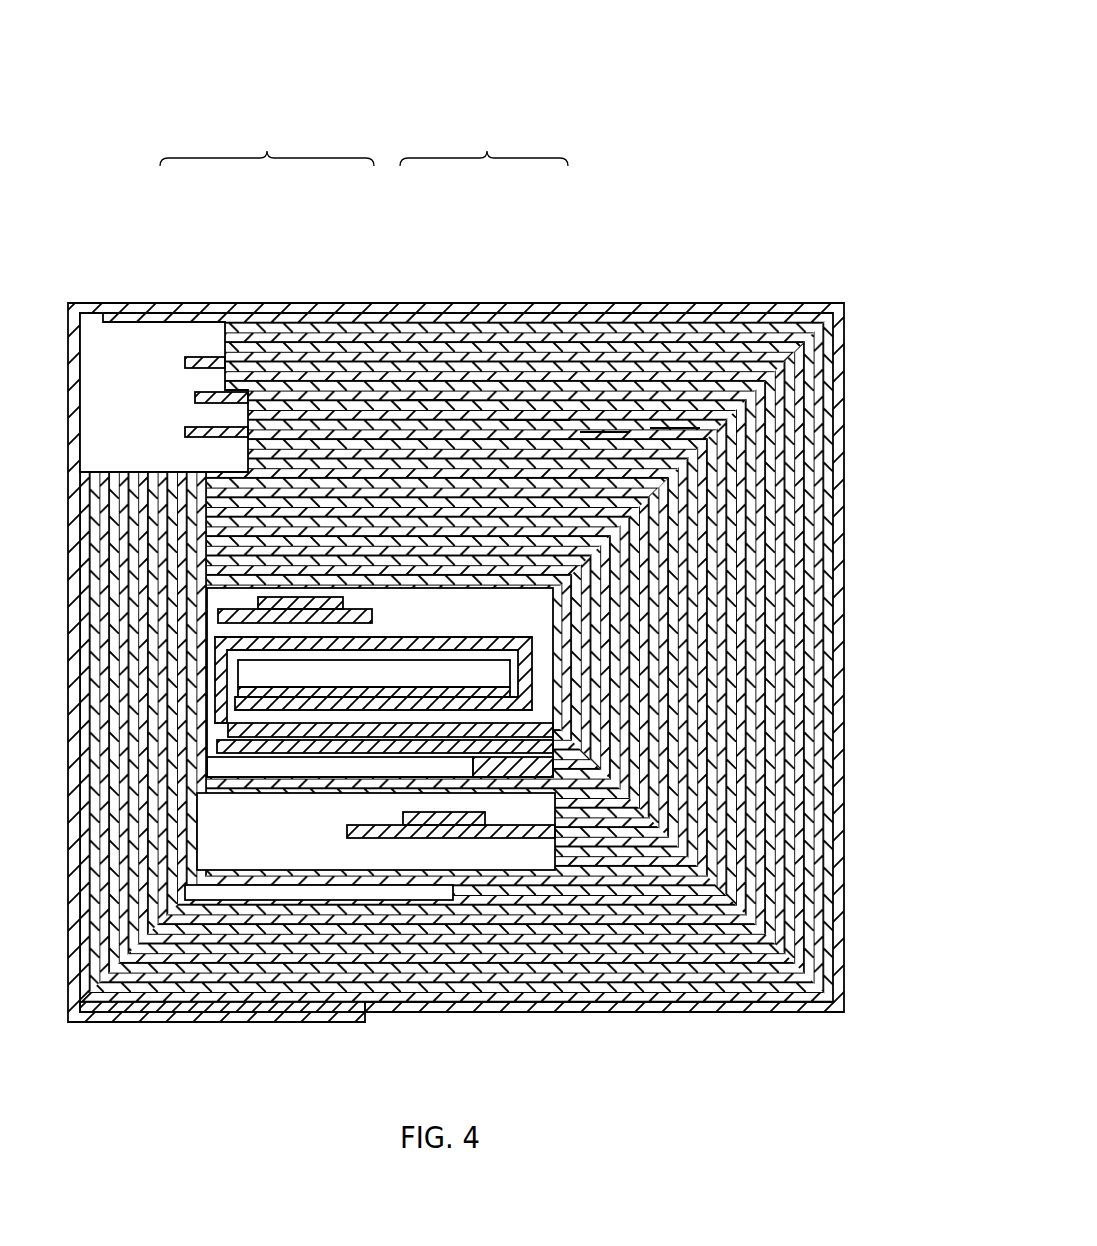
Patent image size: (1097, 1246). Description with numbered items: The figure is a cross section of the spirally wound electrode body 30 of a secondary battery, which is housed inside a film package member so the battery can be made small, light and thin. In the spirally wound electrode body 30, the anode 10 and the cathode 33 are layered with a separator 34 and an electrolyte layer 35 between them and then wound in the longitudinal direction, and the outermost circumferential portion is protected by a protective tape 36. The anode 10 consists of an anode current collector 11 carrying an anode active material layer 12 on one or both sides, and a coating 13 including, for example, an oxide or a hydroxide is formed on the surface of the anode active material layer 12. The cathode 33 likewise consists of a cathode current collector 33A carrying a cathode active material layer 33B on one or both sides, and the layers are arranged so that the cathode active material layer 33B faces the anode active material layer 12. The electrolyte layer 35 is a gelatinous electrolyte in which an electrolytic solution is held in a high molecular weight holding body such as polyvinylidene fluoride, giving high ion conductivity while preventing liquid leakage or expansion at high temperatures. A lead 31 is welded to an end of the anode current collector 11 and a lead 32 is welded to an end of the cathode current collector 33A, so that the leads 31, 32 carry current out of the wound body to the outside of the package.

The anode 10 is at (267, 145).
The anode current collector 11 is at (187, 316).
The anode active material layer 12 is at (273, 467).
The coating 13 is at (341, 455).
The spirally wound electrode body 30 is at (723, 124).
The lead 31 is at (440, 820).
The lead 32 is at (281, 603).
The cathode 33 is at (484, 145).
The cathode current collector 33A is at (425, 400).
The cathode active material layer 33B is at (518, 385).
The separator 34 is at (597, 437).
The electrolyte layer 35 is at (692, 440).
The protective tape 36 is at (797, 304).